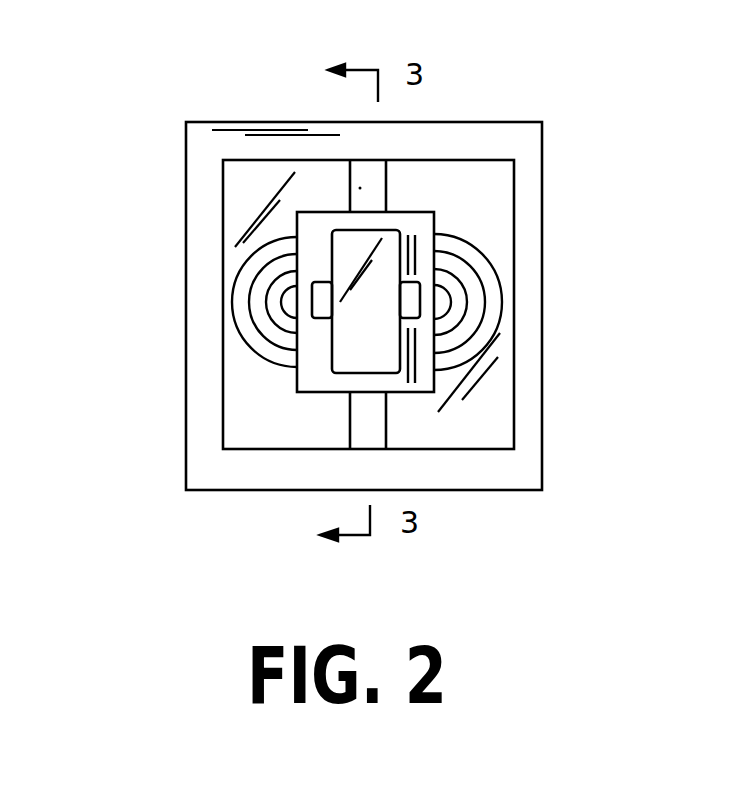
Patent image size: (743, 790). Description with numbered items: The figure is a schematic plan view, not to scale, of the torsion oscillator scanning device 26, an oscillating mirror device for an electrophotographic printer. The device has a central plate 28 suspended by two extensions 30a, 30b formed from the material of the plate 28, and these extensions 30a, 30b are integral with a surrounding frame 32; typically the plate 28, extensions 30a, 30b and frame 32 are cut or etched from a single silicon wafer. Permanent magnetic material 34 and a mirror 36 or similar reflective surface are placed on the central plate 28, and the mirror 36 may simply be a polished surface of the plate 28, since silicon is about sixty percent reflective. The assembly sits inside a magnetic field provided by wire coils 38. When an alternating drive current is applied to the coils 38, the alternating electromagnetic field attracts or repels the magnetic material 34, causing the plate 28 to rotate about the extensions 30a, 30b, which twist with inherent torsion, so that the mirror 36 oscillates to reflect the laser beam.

The torsion oscillator scanning device 26 is at (244, 508).
The central plate 28 is at (425, 342).
The extension 30a is at (370, 193).
The extension 30b is at (378, 427).
The surrounding frame 32 is at (447, 122).
The permanent magnetic material 34 is at (317, 300).
The mirror 36 is at (347, 255).
The wire coils 38 is at (420, 287).